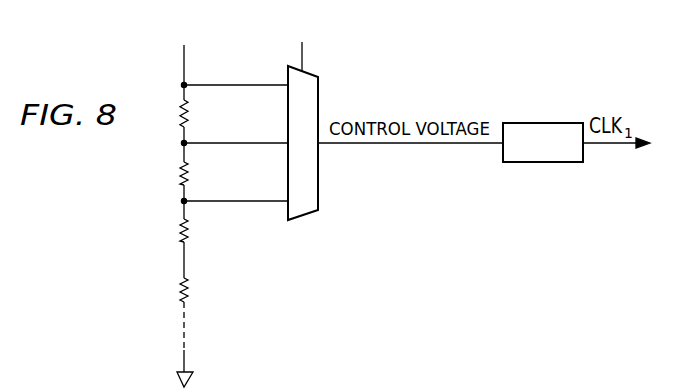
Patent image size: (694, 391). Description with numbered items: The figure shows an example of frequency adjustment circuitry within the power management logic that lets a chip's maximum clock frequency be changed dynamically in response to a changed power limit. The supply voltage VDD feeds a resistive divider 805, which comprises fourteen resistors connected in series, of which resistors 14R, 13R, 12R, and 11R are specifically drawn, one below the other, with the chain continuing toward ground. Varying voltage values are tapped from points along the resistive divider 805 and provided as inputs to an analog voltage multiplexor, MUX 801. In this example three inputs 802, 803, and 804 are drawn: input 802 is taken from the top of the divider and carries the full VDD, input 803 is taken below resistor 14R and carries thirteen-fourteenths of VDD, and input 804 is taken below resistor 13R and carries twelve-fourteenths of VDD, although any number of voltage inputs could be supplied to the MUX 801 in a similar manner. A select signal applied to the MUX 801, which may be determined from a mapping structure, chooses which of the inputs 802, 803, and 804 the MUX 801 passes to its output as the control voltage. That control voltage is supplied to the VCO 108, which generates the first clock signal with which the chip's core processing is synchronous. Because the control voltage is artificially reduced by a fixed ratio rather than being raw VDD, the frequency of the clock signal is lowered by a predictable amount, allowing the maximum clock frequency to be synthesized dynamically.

The resistive divider 805 is at (167, 82).
The resistor 14R is at (166, 113).
The resistor 13R is at (166, 173).
The resistor 12R is at (166, 231).
The resistor 11R is at (166, 290).
The input 802 is at (229, 83).
The input 803 is at (229, 141).
The input 804 is at (229, 203).
The analog voltage multiplexor (MUX) 801 is at (319, 172).
The voltage-controlled oscillator (VCO) 108 is at (545, 122).